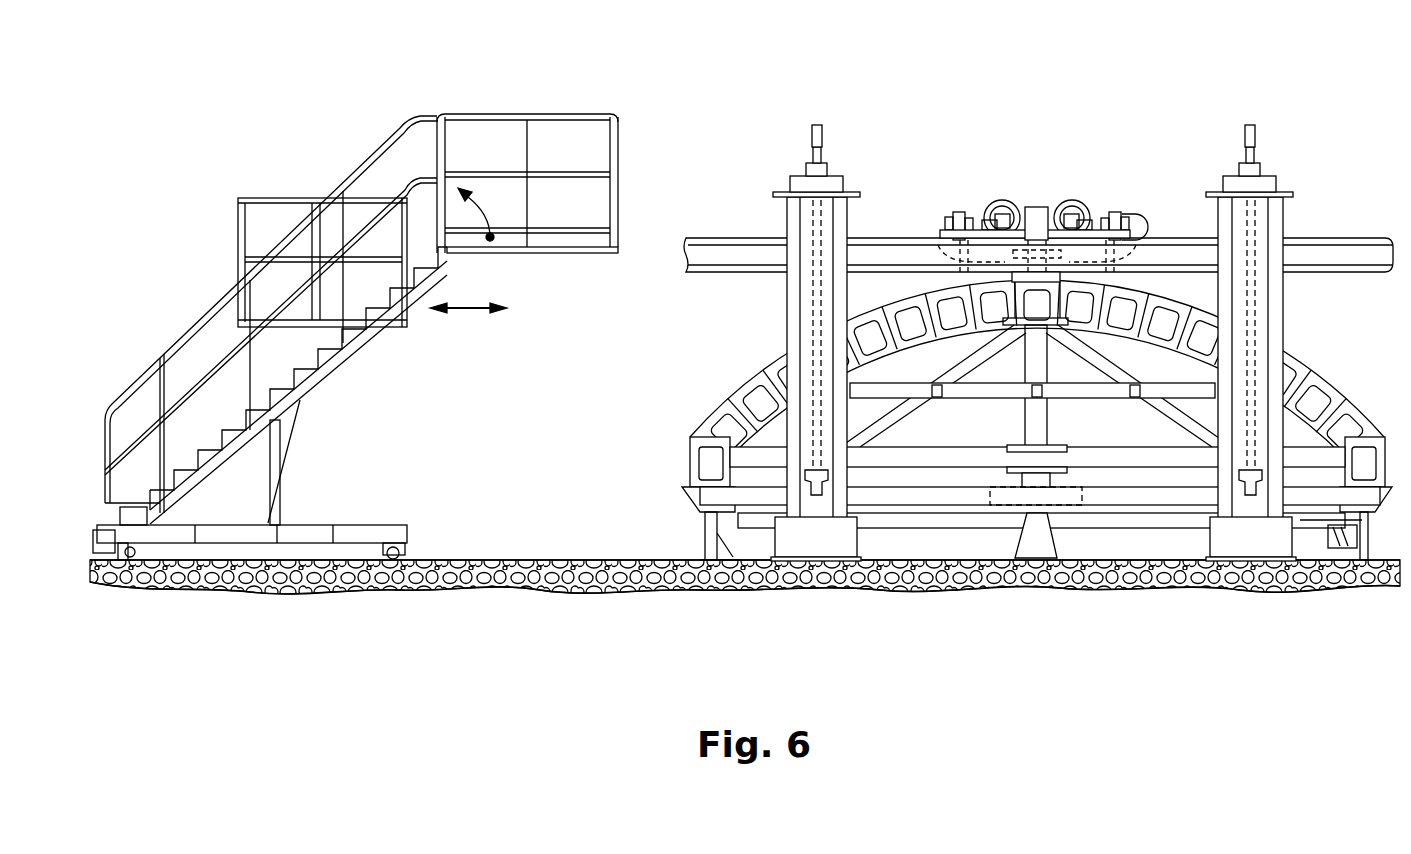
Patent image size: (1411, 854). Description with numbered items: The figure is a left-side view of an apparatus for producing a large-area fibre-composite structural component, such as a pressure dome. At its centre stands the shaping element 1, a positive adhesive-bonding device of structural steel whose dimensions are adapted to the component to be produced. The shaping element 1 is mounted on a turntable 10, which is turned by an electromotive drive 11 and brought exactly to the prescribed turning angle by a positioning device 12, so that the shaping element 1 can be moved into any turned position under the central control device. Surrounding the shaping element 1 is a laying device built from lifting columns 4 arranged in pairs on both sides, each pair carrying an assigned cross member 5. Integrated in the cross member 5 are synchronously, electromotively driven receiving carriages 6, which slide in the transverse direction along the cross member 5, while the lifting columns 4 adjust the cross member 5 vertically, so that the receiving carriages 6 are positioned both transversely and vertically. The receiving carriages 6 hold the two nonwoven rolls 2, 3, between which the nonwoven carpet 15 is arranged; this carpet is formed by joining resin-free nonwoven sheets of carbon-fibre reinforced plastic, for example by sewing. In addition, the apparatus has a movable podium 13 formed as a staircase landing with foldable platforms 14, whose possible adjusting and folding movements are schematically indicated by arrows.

The shaping element 1 is at (1328, 383).
The nonwoven roll 2 is at (1070, 212).
The nonwoven roll 3 is at (1003, 212).
The lifting column 4 is at (818, 518).
The cross member 5 is at (1350, 258).
The receiving carriage 6 is at (937, 238).
The turntable 10 is at (1098, 520).
The electromotive drive 11 is at (1343, 540).
The positioning device 12 is at (713, 492).
The movable podium 13 is at (330, 122).
The foldable platform 14 is at (568, 243).
The nonwoven carpet 15 is at (1040, 207).